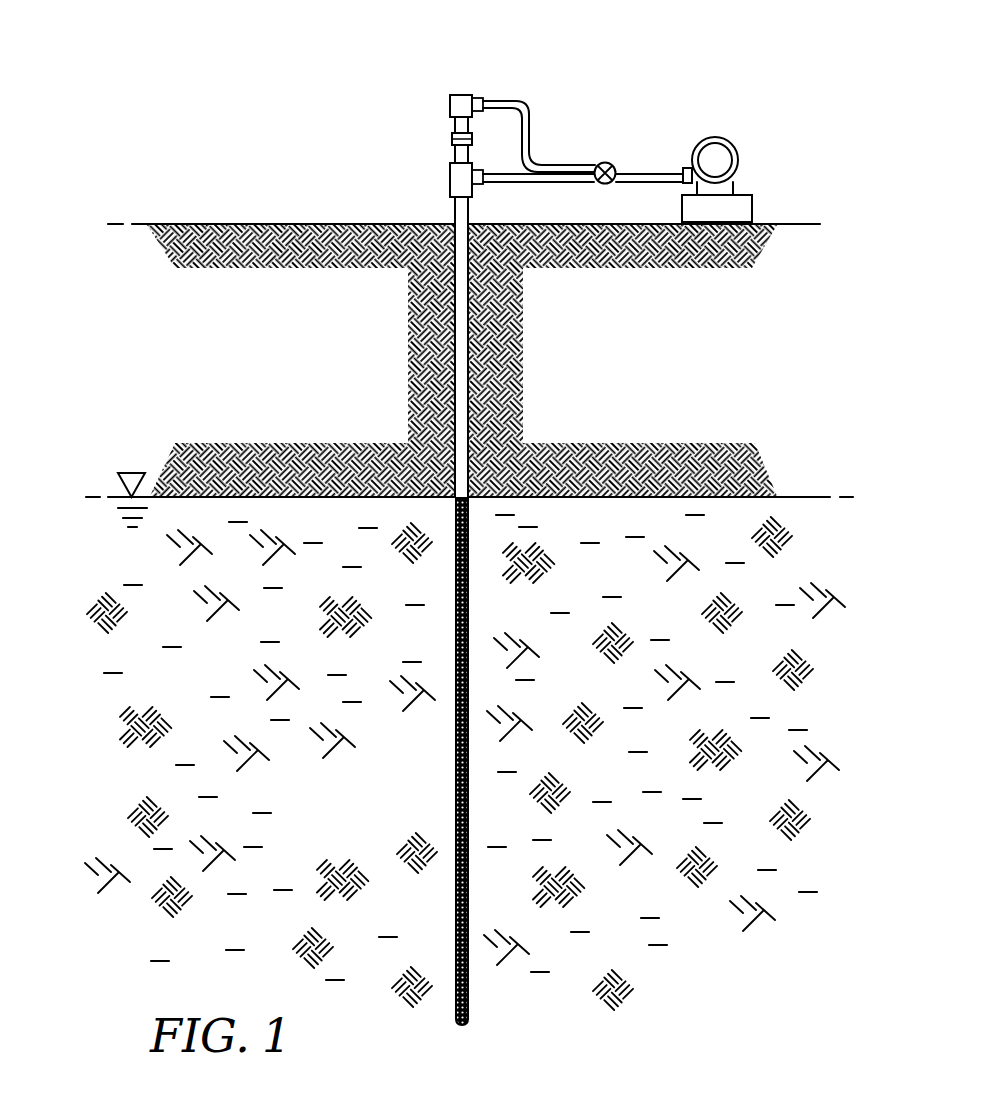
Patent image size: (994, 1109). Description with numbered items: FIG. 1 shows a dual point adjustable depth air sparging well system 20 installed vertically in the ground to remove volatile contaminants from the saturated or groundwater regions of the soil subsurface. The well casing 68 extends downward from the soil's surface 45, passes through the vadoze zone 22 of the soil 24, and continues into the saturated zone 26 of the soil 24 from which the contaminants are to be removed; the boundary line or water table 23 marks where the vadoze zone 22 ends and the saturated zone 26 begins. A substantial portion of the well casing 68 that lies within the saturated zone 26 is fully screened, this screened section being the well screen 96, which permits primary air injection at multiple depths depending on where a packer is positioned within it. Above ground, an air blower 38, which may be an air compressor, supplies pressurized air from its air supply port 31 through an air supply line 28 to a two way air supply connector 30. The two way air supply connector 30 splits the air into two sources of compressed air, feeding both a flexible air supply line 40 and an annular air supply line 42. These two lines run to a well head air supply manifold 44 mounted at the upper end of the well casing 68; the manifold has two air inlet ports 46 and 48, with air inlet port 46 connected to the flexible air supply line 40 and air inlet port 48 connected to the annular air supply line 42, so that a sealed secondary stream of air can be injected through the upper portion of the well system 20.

The dual point adjustable depth air sparging well system 20 is at (418, 136).
The vadoze zone 22 is at (379, 367).
The water table 23 is at (128, 473).
The soil 24 is at (158, 222).
The saturated zone 26 is at (340, 820).
The air supply line 28 is at (643, 170).
The two way air supply connector 30 is at (604, 163).
The air supply port 31 is at (683, 168).
The air blower 38 is at (737, 147).
The flexible air supply line 40 is at (521, 100).
The annular air supply line 42 is at (510, 185).
The well head air supply manifold 44 is at (450, 176).
The soil's surface 45 is at (252, 223).
The air inlet port 46 is at (482, 97).
The air inlet port 48 is at (478, 163).
The well casing 68 is at (455, 212).
The well screen 96 is at (455, 745).